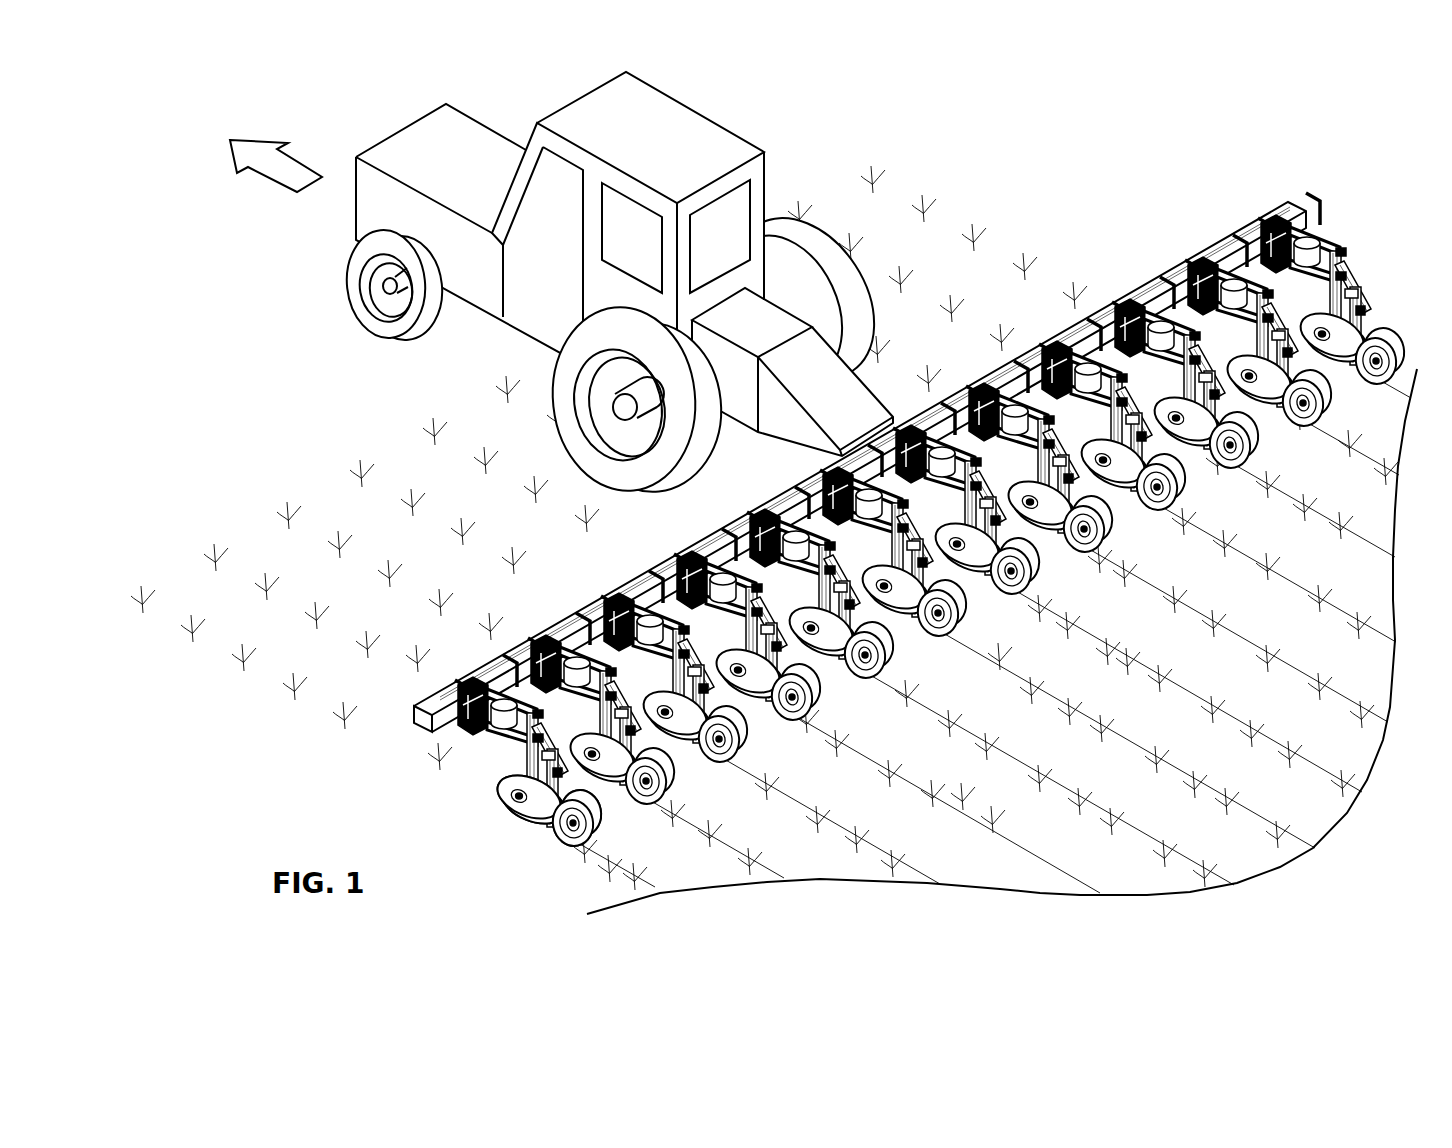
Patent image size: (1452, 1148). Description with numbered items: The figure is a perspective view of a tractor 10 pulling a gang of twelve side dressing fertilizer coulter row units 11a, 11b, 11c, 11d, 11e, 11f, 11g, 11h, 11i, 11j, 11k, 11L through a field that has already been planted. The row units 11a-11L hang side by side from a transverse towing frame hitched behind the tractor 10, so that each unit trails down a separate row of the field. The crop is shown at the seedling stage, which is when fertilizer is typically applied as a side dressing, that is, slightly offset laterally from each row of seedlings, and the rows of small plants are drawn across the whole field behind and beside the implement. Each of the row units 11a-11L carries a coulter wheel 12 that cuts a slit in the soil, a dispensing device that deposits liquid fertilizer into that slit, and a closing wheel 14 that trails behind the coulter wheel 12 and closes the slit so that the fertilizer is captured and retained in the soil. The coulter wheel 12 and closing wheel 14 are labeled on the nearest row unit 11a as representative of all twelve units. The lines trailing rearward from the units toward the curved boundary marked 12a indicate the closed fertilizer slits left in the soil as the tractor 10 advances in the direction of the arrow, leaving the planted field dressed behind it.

The tractor 10 is at (697, 125).
The fertilizer coulter row unit 11a is at (485, 697).
The fertilizer coulter row unit 11b is at (558, 655).
The fertilizer coulter row unit 11c is at (631, 613).
The fertilizer coulter row unit 11d is at (704, 571).
The fertilizer coulter row unit 11e is at (777, 529).
The fertilizer coulter row unit 11f is at (850, 487).
The fertilizer coulter row unit 11g is at (923, 445).
The fertilizer coulter row unit 11h is at (996, 403).
The fertilizer coulter row unit 11i is at (1069, 361).
The fertilizer coulter row unit 11j is at (1142, 319).
The fertilizer coulter row unit 11k is at (1215, 277).
The fertilizer coulter row unit 11L is at (1288, 235).
The coulter wheel 12 is at (505, 790).
The field boundary 12a is at (657, 893).
The closing wheel 14 is at (570, 830).